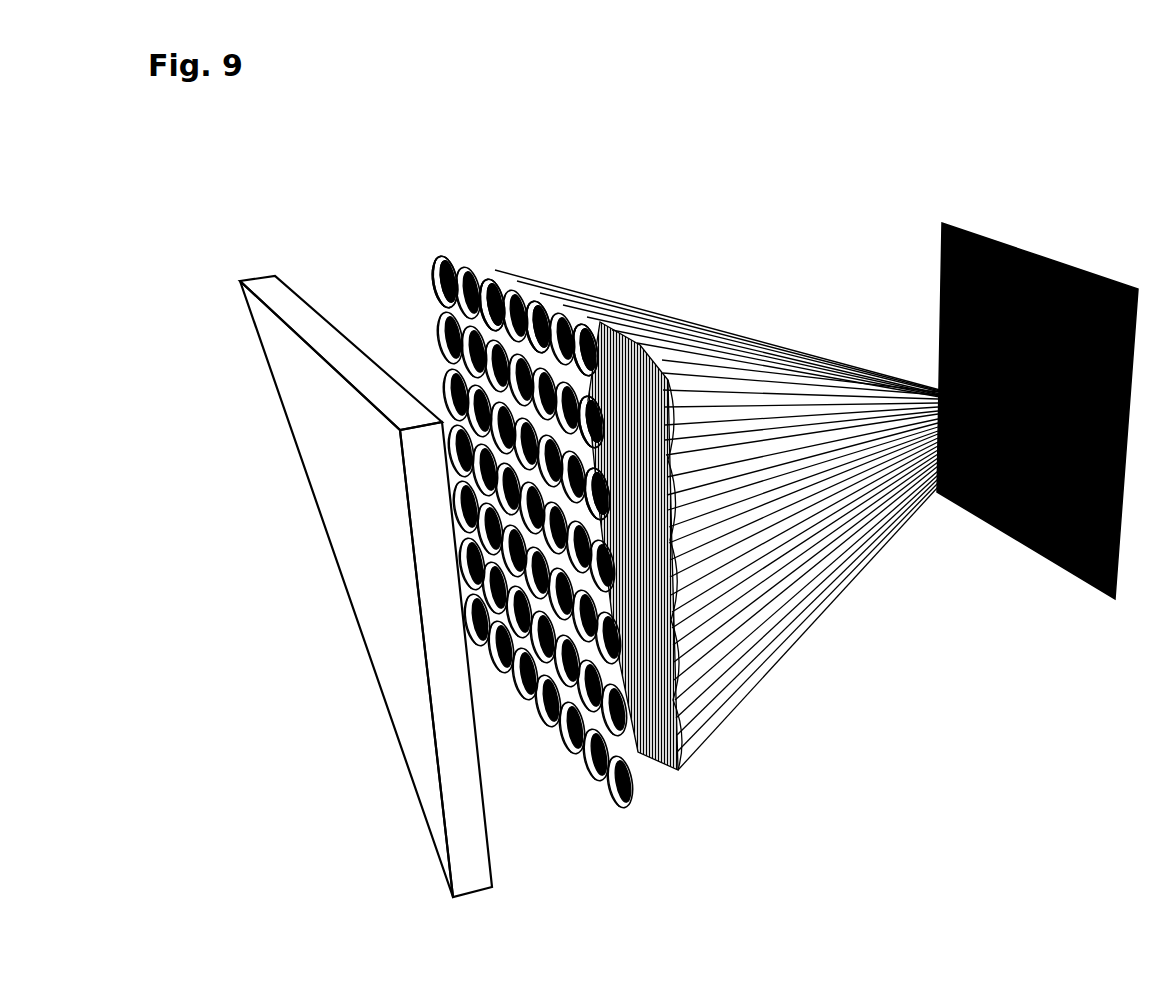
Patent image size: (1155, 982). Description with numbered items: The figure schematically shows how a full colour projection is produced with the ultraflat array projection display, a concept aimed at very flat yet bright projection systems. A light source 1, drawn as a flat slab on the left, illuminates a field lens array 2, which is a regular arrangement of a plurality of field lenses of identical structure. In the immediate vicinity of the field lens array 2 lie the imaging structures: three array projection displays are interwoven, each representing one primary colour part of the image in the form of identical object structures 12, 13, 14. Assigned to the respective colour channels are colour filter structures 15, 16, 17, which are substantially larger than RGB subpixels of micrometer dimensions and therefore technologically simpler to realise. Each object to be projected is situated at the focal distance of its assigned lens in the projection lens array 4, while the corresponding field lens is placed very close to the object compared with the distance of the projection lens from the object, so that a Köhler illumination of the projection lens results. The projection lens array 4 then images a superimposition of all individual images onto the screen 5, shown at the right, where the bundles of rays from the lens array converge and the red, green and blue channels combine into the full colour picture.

The light source 1 is at (270, 279).
The field lens array 2 is at (436, 280).
The object structure 12 is at (454, 272).
The colour filter structure 15 is at (491, 276).
The object structure 13 is at (531, 305).
The colour filter structure 16 is at (589, 326).
The object structure 14 is at (637, 342).
The colour filter structure 17 is at (683, 350).
The projection lens array 4 is at (680, 768).
The screen 5 is at (945, 224).